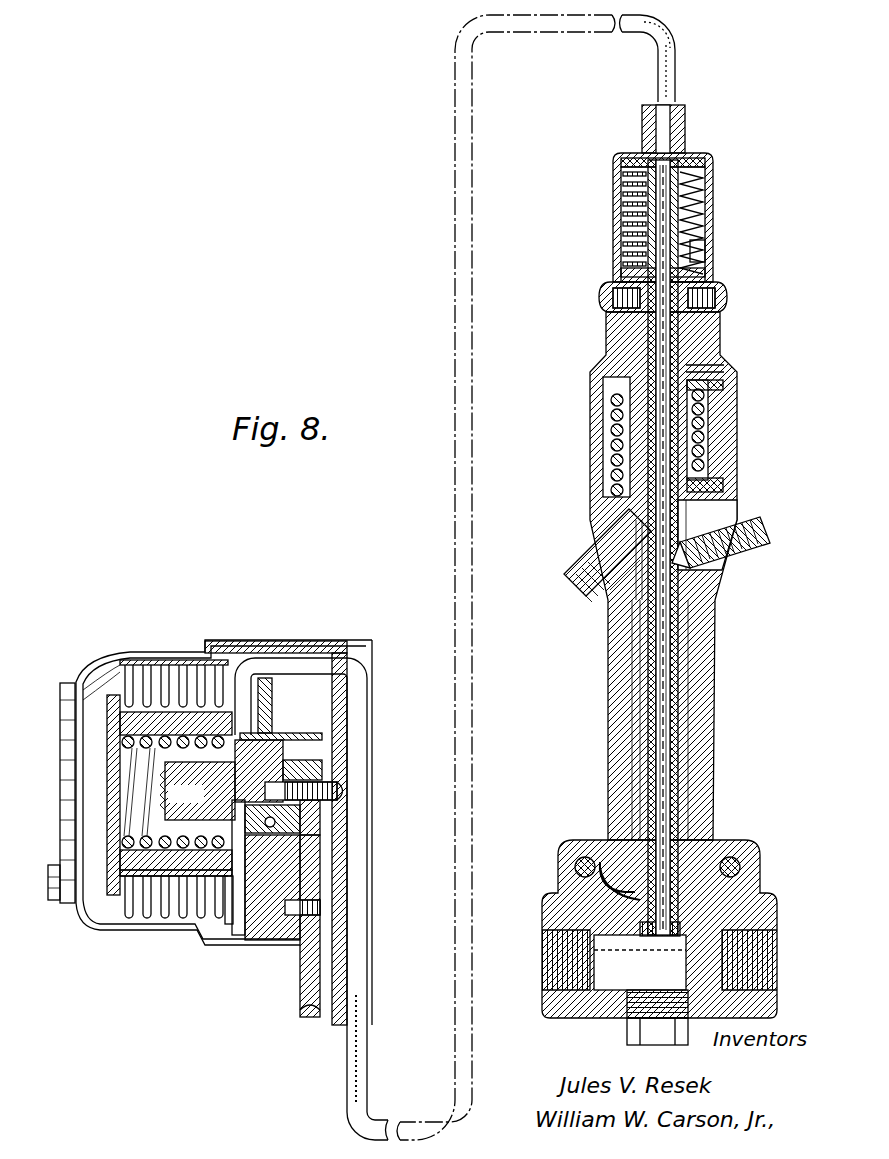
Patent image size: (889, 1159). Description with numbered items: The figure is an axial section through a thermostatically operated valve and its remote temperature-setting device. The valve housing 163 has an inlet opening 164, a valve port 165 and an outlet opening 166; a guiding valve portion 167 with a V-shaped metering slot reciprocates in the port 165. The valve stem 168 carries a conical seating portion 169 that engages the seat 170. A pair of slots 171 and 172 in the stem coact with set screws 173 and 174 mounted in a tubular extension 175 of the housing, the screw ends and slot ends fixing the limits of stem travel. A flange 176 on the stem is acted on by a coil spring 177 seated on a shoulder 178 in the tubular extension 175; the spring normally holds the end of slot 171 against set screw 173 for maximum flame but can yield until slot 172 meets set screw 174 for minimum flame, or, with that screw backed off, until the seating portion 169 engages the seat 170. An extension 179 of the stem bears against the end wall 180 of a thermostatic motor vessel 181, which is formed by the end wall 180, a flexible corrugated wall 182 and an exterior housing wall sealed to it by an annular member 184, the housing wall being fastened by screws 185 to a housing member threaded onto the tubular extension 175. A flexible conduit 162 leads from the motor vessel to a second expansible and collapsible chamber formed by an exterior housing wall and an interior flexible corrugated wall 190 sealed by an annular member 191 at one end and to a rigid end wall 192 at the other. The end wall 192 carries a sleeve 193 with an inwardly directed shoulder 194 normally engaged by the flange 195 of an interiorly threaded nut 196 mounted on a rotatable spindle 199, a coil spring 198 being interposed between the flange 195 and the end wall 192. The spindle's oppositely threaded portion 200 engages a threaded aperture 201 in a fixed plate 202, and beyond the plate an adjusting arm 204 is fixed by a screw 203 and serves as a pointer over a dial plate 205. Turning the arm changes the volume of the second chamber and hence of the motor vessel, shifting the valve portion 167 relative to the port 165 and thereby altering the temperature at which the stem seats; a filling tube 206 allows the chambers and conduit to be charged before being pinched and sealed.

The conduit 162 is at (652, 30).
The valve housing 163 is at (722, 855).
The inlet opening 164 is at (765, 962).
The valve port 165 is at (665, 940).
The outlet opening 166 is at (560, 972).
The guiding valve portion 167 is at (705, 910).
The valve stem 168 is at (638, 780).
The conical seating portion 169 is at (605, 890).
The valve seat 170 is at (636, 915).
The slot 171 is at (696, 540).
The slot 172 is at (612, 595).
The set screw 173 is at (742, 555).
The set screw 174 is at (595, 562).
The tubular extension 175 is at (702, 704).
The flange 176 is at (712, 382).
The coil spring 177 is at (706, 437).
The shoulder 178 is at (724, 493).
The extension 179 is at (717, 276).
The end wall 180 is at (680, 163).
The thermostatic motor vessel 181 is at (712, 175).
The flexible corrugated wall 182 is at (706, 212).
The annular member 184 is at (714, 252).
The screws 185 is at (724, 289).
The interior flexible corrugated wall 190 is at (137, 920).
The annular member 191 is at (216, 940).
The end wall 192 is at (80, 920).
The sleeve 193 is at (168, 900).
The inwardly directed shoulder 194 is at (246, 940).
The flange 195 is at (270, 722).
The interiorly threaded nut 196 is at (197, 791).
The coil spring 198 is at (118, 755).
The spindle 199 is at (286, 770).
The threaded portion 200 is at (290, 815).
The interiorly threaded aperture 201 is at (283, 836).
The fixed plate 202 is at (275, 885).
The screw 203 is at (340, 788).
The adjusting arm 204 is at (305, 998).
The dial plate 205 is at (338, 1022).
The filling tube 206 is at (282, 735).